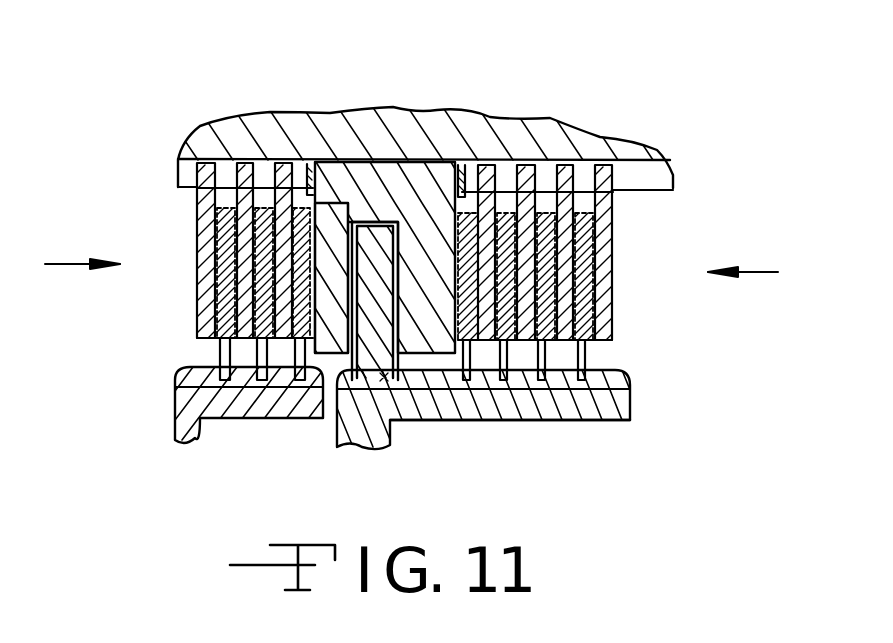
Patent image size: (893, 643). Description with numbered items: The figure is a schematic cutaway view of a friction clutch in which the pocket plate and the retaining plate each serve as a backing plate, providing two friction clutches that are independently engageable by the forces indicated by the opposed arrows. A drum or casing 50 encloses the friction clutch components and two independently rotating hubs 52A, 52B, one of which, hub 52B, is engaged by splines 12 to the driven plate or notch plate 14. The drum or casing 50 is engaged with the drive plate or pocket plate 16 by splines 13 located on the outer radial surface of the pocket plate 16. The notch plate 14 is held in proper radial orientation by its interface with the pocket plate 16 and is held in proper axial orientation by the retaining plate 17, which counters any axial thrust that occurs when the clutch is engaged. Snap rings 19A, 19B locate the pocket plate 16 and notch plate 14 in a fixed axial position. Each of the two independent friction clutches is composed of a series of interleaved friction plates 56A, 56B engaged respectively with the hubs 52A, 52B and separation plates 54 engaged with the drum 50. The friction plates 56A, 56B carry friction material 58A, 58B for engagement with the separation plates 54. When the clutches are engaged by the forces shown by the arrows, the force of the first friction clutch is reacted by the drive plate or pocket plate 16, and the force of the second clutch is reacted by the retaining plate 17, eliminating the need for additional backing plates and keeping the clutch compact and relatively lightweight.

The inner radial splines 12 is at (415, 423).
The splines 13 is at (408, 208).
The notch plate 14 is at (373, 333).
The pocket plate 16 is at (445, 150).
The retaining plate 17 is at (340, 284).
The snap ring 19A is at (308, 162).
The snap ring 19B is at (423, 250).
The drum or casing 50 is at (280, 115).
The hub 52A is at (185, 407).
The hub 52B is at (477, 410).
The separation plates 54 is at (603, 168).
The friction plates 56A is at (283, 338).
The friction plates 56B is at (467, 377).
The friction material 58A is at (215, 272).
The friction material 58B is at (613, 303).